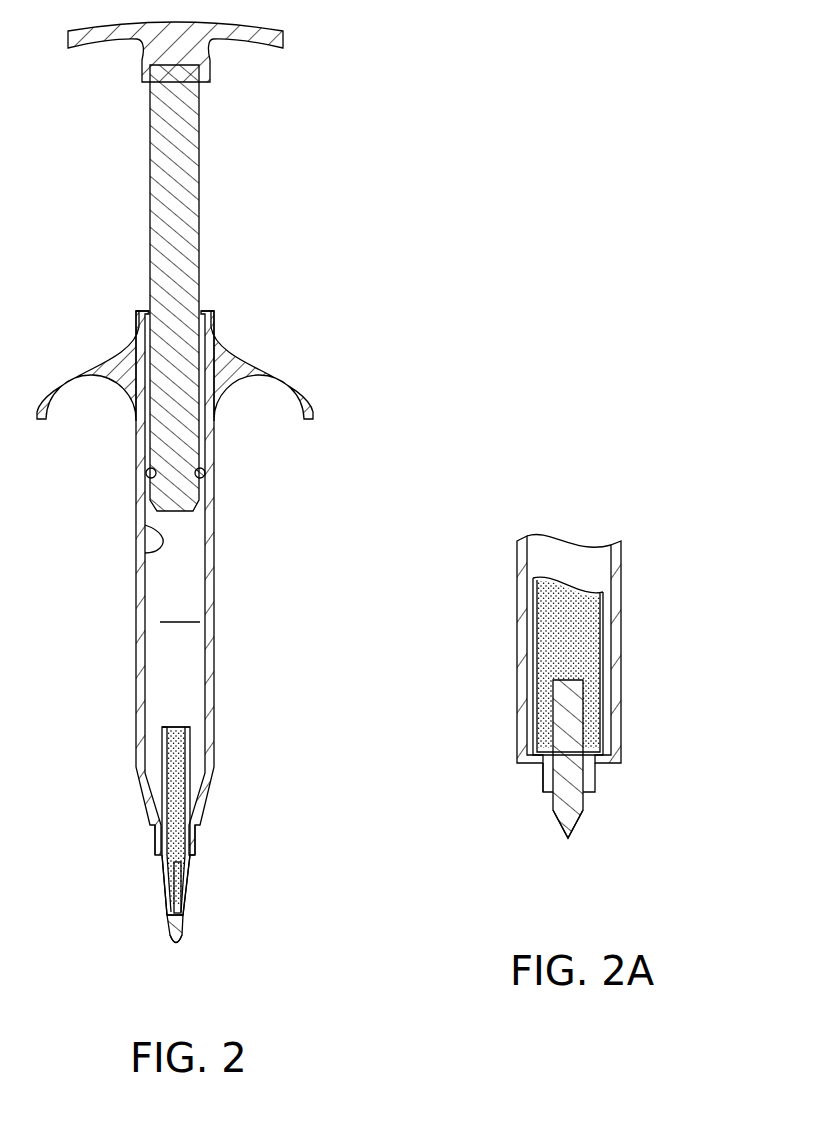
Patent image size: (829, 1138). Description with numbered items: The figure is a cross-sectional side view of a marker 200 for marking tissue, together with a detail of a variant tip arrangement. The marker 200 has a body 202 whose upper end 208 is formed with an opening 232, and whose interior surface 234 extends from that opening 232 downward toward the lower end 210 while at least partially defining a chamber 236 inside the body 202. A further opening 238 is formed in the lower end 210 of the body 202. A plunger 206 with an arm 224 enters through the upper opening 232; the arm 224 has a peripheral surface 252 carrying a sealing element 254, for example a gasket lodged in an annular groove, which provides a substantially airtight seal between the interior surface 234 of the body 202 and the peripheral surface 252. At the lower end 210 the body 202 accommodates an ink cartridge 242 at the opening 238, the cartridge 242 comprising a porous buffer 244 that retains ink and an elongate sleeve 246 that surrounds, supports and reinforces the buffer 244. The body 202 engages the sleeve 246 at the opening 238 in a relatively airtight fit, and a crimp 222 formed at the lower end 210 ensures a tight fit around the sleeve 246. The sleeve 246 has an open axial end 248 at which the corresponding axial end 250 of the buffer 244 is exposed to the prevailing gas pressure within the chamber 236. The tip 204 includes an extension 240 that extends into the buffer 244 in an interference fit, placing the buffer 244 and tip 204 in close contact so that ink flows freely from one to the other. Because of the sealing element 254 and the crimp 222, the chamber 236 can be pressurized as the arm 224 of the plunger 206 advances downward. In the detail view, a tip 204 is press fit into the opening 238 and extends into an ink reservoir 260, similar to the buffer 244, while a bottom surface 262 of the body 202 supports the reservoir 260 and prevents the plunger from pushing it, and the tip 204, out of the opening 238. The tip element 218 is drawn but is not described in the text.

In FIG. 2, the marker 200 is at (336, 46).
In FIG. 2, the body 202 is at (216, 553).
In FIG. 2A, the body 202 is at (517, 589).
In FIG. 2, the tip 204 is at (175, 952).
In FIG. 2A, the tip 204 is at (584, 832).
In FIG. 2, the plunger 206 is at (211, 156).
In FIG. 2, the upper end 208 is at (220, 316).
In FIG. 2A, the upper end 208 is at (624, 511).
In FIG. 2, the lower end 210 is at (197, 862).
In FIG. 2, the tip 218 is at (186, 925).
In FIG. 2, the crimp 222 is at (196, 846).
In FIG. 2, the arm 224 is at (150, 137).
In FIG. 2, the opening 232 is at (143, 298).
In FIG. 2, the interior surface 234 is at (162, 548).
In FIG. 2, the chamber 236 is at (181, 606).
In FIG. 2, the opening 238 is at (154, 859).
In FIG. 2A, the opening 238 is at (545, 804).
In FIG. 2, the extension 240 is at (175, 888).
In FIG. 2, the ink cartridge 242 is at (197, 733).
In FIG. 2, the buffer 244 is at (172, 776).
In FIG. 2, the sleeve 246 is at (190, 770).
In FIG. 2, the axial end 248 is at (193, 714).
In FIG. 2, the axial end 250 is at (174, 728).
In FIG. 2, the peripheral surface 252 is at (150, 470).
In FIG. 2, the sealing element 254 is at (203, 474).
In FIG. 2A, the ink reservoir 260 is at (577, 635).
In FIG. 2A, the bottom surface 262 is at (537, 752).